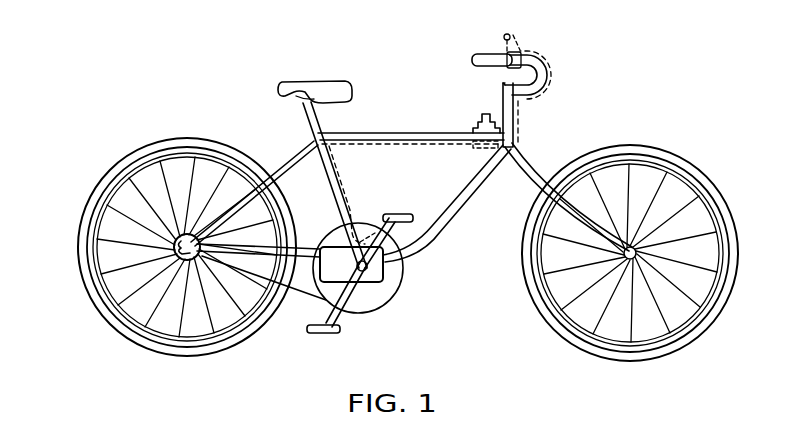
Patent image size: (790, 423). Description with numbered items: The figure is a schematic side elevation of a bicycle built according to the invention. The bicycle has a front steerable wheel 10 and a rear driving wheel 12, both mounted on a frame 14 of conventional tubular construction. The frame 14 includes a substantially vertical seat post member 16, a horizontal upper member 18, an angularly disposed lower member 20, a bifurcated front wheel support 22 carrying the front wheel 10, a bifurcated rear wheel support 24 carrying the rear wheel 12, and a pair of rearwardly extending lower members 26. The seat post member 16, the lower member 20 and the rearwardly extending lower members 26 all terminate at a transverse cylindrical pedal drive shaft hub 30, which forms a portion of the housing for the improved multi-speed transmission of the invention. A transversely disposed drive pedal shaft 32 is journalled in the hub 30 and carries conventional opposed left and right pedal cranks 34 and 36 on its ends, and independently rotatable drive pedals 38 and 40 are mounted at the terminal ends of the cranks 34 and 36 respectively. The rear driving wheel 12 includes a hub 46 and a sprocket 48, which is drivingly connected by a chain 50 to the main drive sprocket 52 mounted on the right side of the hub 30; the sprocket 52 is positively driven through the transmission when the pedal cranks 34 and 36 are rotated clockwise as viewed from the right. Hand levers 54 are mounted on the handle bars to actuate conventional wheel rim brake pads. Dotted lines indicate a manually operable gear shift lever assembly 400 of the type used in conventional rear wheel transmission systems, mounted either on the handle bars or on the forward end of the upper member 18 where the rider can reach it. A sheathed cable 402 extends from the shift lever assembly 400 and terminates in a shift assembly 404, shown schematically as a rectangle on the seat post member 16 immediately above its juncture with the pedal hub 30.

The front steerable wheel 10 is at (708, 181).
The rear driving wheel 12 is at (78, 250).
The frame 14 is at (274, 109).
The seat post member 16 is at (345, 138).
The horizontal upper member 18 is at (398, 132).
The lower member 20 is at (455, 212).
The bifurcated front wheel support 22 is at (540, 164).
The bifurcated rear wheel support 24 is at (288, 165).
The rearwardly extending lower members 26 is at (307, 228).
The pedal drive shaft hub 30 is at (323, 300).
The drive pedal shaft 32 is at (392, 270).
The pedal crank 34 is at (383, 222).
The pedal crank 36 is at (358, 296).
The drive pedal 38 is at (398, 213).
The drive pedal 40 is at (328, 335).
The hub 46 is at (165, 262).
The sprocket 48 is at (165, 224).
The chain 50 is at (206, 286).
The main drive sprocket 52 is at (398, 296).
The hand levers 54 is at (508, 63).
The gear shift lever assembly 400 is at (475, 125).
The sheathed cable 402 is at (437, 150).
The shift assembly 404 is at (398, 231).